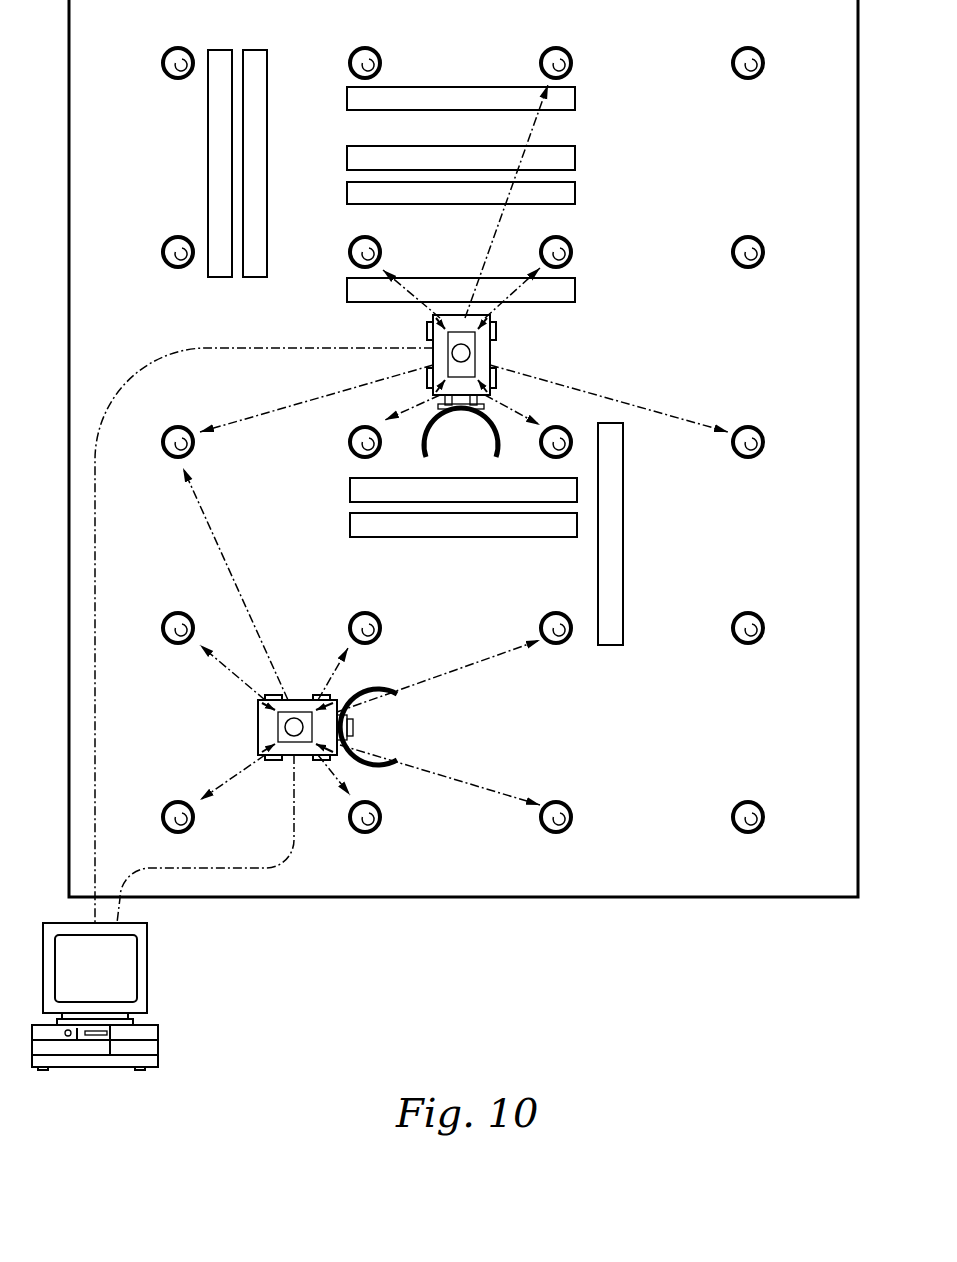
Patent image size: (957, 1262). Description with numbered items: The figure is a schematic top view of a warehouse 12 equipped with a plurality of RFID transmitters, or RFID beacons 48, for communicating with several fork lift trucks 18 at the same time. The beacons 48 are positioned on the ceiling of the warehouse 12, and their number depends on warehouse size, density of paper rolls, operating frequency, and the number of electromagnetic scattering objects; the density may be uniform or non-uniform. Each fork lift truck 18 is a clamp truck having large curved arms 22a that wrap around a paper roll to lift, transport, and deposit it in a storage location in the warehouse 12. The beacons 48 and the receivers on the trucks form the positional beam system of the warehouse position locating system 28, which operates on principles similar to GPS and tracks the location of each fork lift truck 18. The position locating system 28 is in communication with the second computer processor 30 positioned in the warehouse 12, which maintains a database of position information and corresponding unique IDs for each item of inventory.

The warehouse 12 is at (705, 860).
The fork lift truck 18 is at (492, 348).
The curved arms 22a is at (395, 706).
The warehouse position locating system 28 is at (297, 937).
The second computer processor 30 is at (158, 1040).
The RFID beacons 48 is at (463, 437).